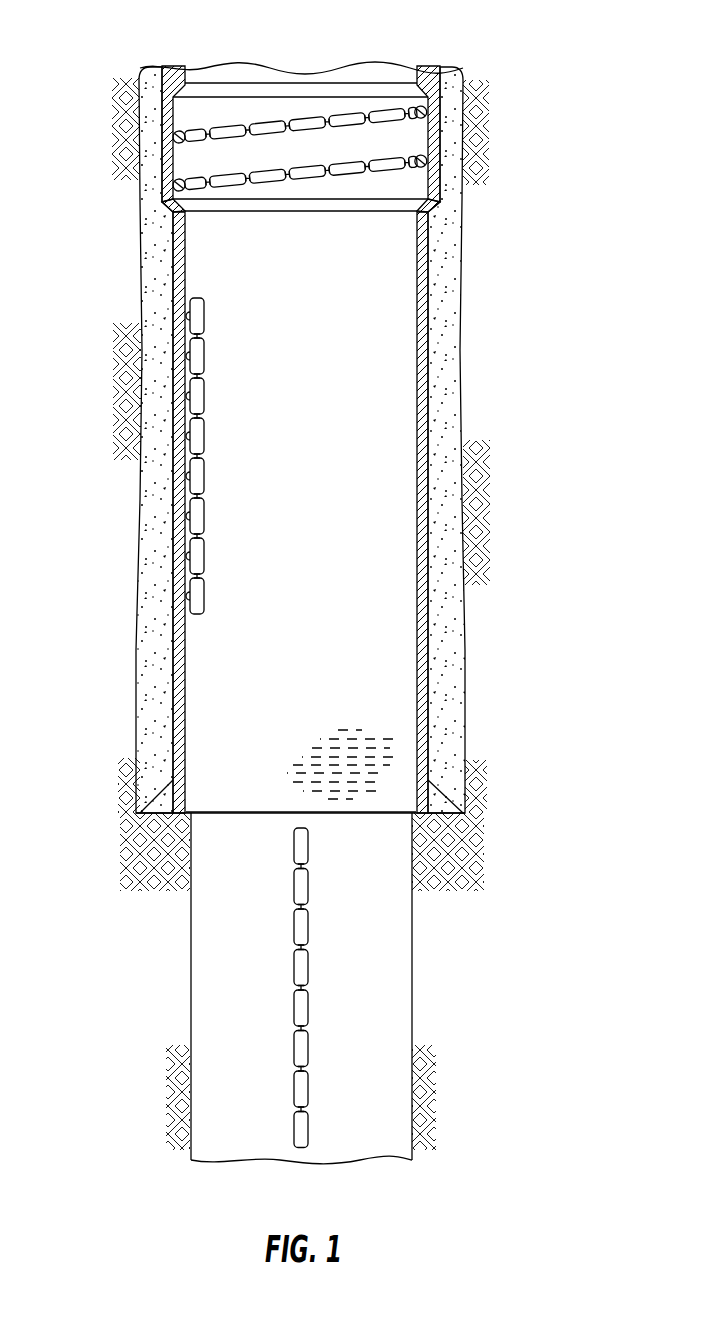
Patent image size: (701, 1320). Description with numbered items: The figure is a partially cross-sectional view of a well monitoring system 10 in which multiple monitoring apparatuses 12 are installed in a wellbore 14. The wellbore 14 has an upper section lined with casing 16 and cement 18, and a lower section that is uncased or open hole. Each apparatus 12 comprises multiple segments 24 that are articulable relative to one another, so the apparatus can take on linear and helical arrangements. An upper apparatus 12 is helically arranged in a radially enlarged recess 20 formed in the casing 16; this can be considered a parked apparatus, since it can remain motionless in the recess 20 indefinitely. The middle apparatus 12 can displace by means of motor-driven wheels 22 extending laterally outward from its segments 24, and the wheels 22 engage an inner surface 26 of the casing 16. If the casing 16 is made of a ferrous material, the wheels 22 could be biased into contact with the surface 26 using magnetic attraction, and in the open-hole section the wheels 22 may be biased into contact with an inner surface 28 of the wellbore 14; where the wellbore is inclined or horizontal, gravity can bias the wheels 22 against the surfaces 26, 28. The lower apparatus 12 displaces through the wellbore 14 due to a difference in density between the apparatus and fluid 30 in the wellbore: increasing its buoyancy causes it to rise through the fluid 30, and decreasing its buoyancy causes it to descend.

The well monitoring system 10 is at (558, 70).
The monitoring apparatus 12 is at (298, 186).
The wellbore 14 is at (463, 653).
The casing 16 is at (170, 301).
The cement 18 is at (140, 318).
The radially enlarged recess 20 is at (415, 185).
The motor-driven wheels 22 is at (183, 357).
The segments 24 is at (232, 123).
The inner surface of the casing 26 is at (185, 734).
The inner surface of the wellbore 28 is at (195, 982).
The fluid 30 is at (360, 742).